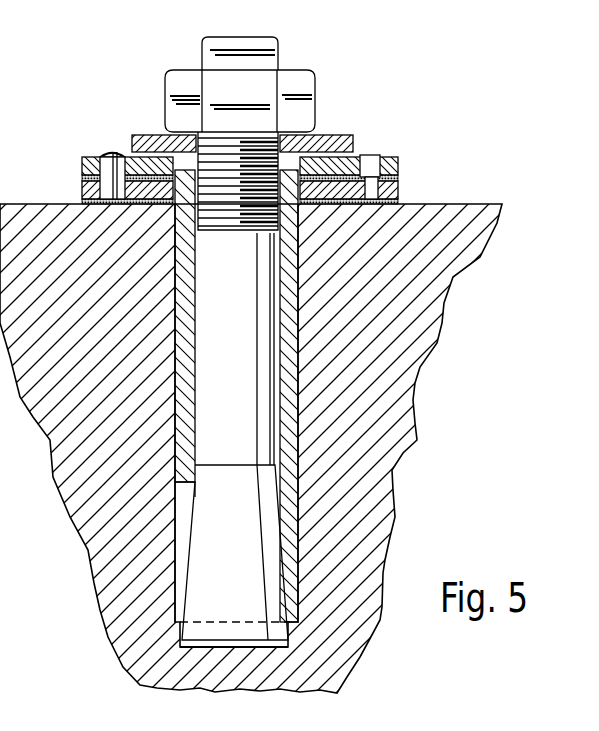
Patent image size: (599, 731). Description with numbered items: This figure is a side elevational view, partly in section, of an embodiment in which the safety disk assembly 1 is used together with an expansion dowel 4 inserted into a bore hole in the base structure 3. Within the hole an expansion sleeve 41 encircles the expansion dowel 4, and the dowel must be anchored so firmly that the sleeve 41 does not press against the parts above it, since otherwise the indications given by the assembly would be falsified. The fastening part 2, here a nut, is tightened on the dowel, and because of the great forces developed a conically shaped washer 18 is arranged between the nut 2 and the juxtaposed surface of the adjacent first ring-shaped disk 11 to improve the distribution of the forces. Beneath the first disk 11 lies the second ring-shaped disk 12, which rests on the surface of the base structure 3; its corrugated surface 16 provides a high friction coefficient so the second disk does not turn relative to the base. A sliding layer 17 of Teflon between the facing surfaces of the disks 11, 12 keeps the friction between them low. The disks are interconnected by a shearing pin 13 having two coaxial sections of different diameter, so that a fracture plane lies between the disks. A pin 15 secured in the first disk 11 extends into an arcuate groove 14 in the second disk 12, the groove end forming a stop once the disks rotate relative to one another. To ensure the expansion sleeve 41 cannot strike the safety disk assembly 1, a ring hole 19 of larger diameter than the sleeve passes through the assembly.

The safety disk assembly 1 is at (250, 342).
The fastening part 2 is at (315, 93).
The base structure 3 is at (458, 255).
The expansion dowel 4 is at (265, 412).
The expansion sleeve 41 is at (290, 370).
The first ring-shaped disk 11 is at (242, 136).
The second ring-shaped disk 12 is at (82, 190).
The shearing pin 13 is at (372, 155).
The arcuate groove 14 is at (115, 152).
The pin 15 is at (108, 152).
The corrugated surface 16 is at (400, 202).
The sliding layer 17 is at (82, 178).
The conically shaped washer 18 is at (153, 135).
The ring hole 19 is at (305, 158).